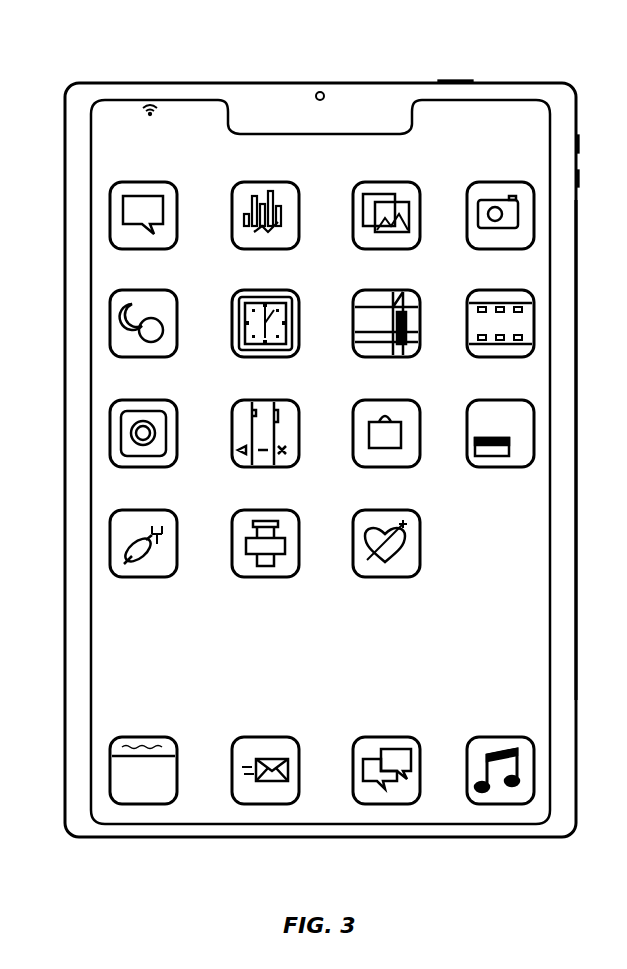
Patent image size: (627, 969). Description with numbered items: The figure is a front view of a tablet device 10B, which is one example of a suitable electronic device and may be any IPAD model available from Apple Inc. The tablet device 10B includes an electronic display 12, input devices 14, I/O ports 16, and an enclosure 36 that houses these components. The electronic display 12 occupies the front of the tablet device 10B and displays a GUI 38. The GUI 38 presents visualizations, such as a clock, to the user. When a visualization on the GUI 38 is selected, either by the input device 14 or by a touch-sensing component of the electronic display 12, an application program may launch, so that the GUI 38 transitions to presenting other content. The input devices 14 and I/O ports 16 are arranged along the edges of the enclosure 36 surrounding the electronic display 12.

The tablet device 10B is at (50, 63).
The electronic display 12 is at (548, 515).
The input devices 14 is at (455, 80).
The I/O ports 16 is at (115, 82).
The enclosure 36 is at (577, 336).
The GUI 38 is at (527, 596).